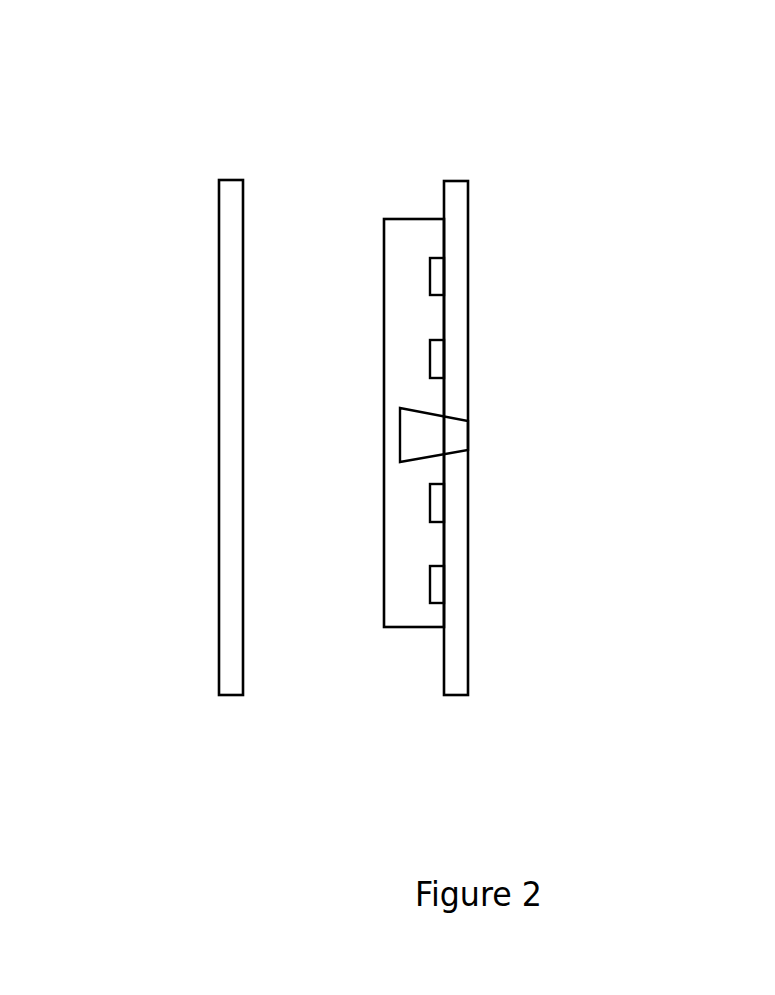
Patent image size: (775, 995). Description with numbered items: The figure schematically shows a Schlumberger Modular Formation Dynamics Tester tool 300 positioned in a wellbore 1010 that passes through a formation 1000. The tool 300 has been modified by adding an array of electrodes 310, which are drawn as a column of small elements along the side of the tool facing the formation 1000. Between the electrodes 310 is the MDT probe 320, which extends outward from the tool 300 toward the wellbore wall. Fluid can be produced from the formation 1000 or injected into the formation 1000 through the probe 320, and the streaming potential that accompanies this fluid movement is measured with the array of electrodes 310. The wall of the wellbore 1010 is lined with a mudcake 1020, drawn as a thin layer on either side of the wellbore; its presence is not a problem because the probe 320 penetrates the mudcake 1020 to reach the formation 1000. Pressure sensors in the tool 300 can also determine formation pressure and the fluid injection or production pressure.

The Modular Formation Dynamics Tester tool 300 is at (412, 225).
The array of electrodes 310 is at (450, 272).
The MDT probe 320 is at (463, 438).
The formation 1000 is at (404, 595).
The wellbore 1010 is at (376, 450).
The mudcake 1020 is at (208, 259).